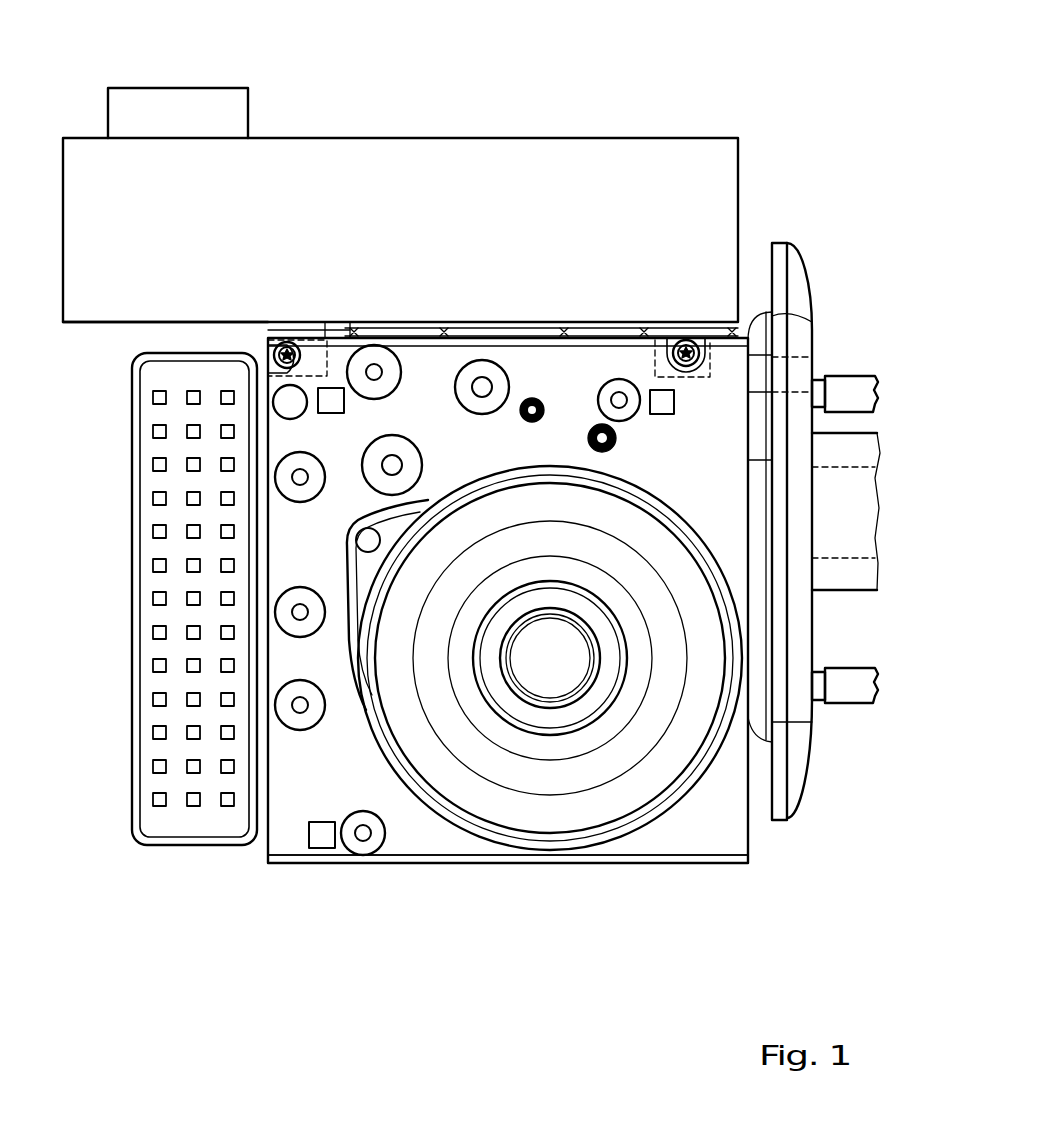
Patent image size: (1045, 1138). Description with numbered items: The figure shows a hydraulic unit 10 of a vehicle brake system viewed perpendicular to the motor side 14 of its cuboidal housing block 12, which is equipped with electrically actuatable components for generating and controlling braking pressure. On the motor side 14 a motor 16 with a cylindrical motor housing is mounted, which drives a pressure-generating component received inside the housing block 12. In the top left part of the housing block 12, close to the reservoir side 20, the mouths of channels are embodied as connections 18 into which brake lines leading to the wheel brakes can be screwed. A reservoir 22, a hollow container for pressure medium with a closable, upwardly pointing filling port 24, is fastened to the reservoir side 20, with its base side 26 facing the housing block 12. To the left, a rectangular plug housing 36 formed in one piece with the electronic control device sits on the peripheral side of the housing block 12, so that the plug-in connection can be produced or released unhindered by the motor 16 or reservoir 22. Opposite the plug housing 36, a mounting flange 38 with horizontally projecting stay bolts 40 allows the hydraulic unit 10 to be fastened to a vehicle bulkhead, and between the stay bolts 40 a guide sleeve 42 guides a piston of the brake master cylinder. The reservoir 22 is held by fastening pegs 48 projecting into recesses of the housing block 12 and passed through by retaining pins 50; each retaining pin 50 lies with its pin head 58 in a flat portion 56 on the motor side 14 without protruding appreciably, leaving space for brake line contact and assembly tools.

The hydraulic unit 10 is at (658, 72).
The housing block 12 is at (296, 833).
The motor side 14 is at (308, 784).
The motor 16 is at (622, 795).
The connections 18 is at (372, 388).
The reservoir side 20 is at (482, 328).
The reservoir 22 is at (530, 158).
The filling port 24 is at (175, 105).
The base side 26 is at (84, 328).
The plug housing 36 is at (155, 478).
The mounting flange 38 is at (795, 290).
The stay bolts 40 is at (850, 393).
The guide sleeve 42 is at (850, 572).
The fastening pegs 48 is at (337, 338).
The retaining pins 50 is at (288, 352).
The flat portions 56 is at (278, 346).
The pin head 58 is at (288, 352).